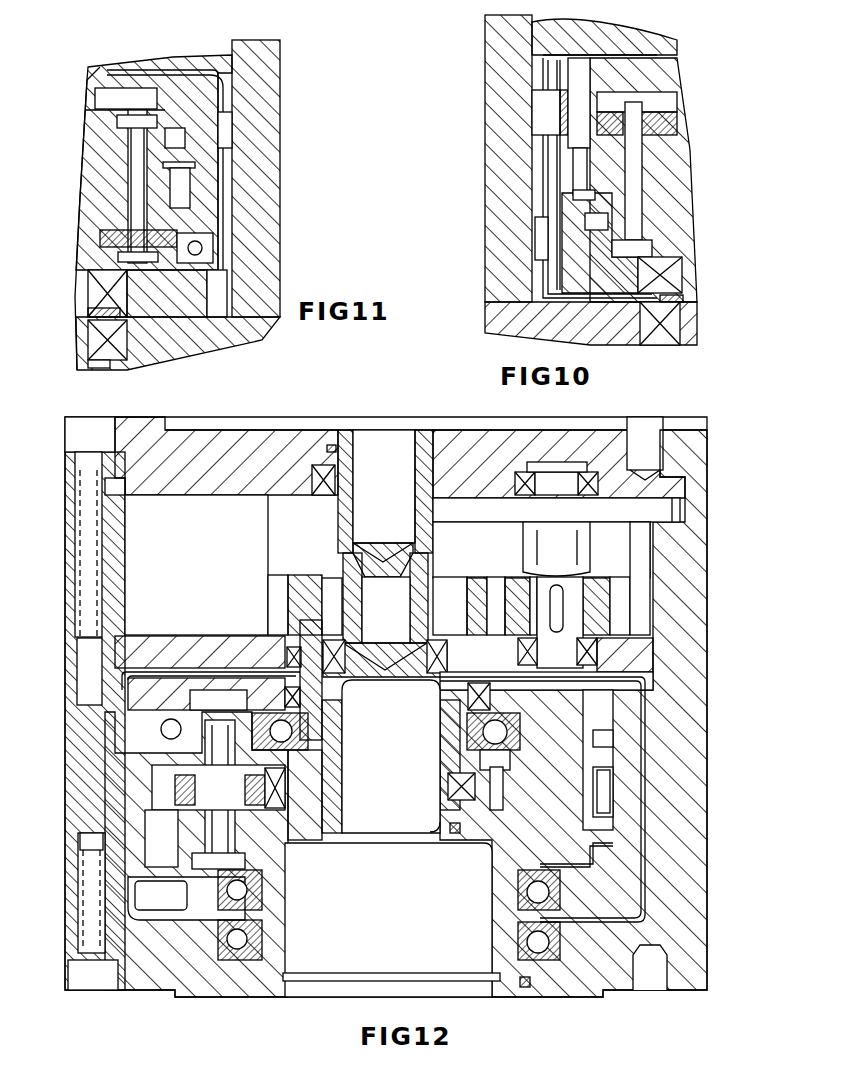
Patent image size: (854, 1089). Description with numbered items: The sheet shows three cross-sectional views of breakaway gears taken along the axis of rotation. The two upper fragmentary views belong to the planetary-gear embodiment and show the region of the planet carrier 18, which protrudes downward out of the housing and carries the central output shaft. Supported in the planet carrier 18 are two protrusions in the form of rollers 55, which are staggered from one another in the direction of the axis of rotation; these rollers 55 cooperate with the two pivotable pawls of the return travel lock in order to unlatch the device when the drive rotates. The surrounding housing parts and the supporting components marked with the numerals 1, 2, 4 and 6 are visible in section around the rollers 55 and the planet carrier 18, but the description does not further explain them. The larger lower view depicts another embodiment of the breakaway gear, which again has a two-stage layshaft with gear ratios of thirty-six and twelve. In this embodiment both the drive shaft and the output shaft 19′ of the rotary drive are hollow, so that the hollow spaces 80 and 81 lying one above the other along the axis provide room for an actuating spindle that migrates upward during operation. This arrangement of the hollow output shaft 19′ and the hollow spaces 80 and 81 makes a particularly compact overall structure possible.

In FIG. 11, the housing wall 1 is at (272, 97).
In FIG. 11, the body 2 is at (208, 130).
In FIG. 11, the block with bore 4 is at (207, 250).
In FIG. 11, the rollers 55 is at (173, 230).
In FIG. 10, the rollers 55 is at (667, 122).
In FIG. 10, the planet carrier 18 is at (683, 205).
In FIG. 12, the ring element 6 is at (625, 605).
In FIG. 12, the hollow space 80 is at (400, 775).
In FIG. 12, the hollow space 81 is at (460, 955).
In FIG. 12, the output shaft 19′ is at (273, 948).